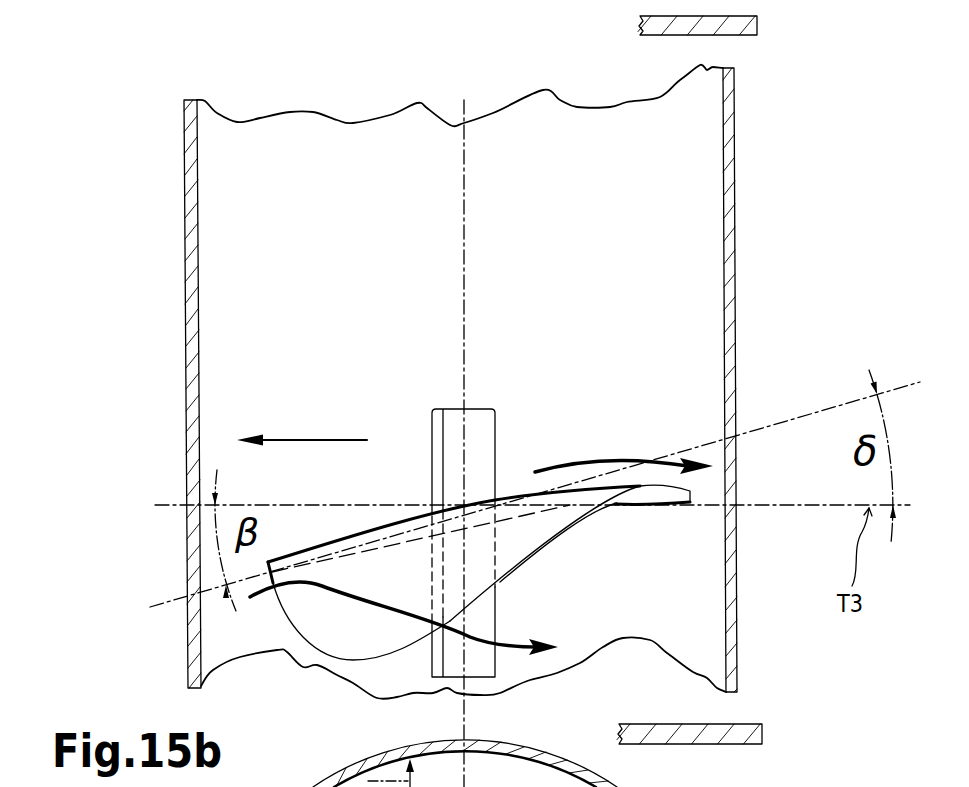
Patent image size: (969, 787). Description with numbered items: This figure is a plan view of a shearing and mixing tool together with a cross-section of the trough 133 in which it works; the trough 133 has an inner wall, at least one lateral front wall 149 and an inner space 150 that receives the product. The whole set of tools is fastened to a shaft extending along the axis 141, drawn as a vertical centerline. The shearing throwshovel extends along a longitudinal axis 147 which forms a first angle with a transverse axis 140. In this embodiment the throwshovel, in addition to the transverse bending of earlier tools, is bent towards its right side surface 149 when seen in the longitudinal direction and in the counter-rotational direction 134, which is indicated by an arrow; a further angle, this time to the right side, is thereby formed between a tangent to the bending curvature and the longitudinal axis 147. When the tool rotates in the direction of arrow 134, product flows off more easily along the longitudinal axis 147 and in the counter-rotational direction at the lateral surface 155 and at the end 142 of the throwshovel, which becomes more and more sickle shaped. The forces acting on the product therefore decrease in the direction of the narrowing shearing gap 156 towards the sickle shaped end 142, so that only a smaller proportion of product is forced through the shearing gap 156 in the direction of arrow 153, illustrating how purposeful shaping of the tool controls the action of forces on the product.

The trough 133 is at (190, 494).
The counter-rotational direction 134 is at (278, 440).
The transverse axis 140 is at (356, 505).
The axis 141 is at (463, 188).
The sickle shaped end 142 is at (692, 497).
The longitudinal axis 147 is at (825, 408).
The lateral front wall 149 is at (759, 27).
The inner space 150 is at (658, 258).
The arrow 153 is at (373, 597).
The lateral surface 155 is at (583, 486).
The shearing gap 156 is at (372, 778).